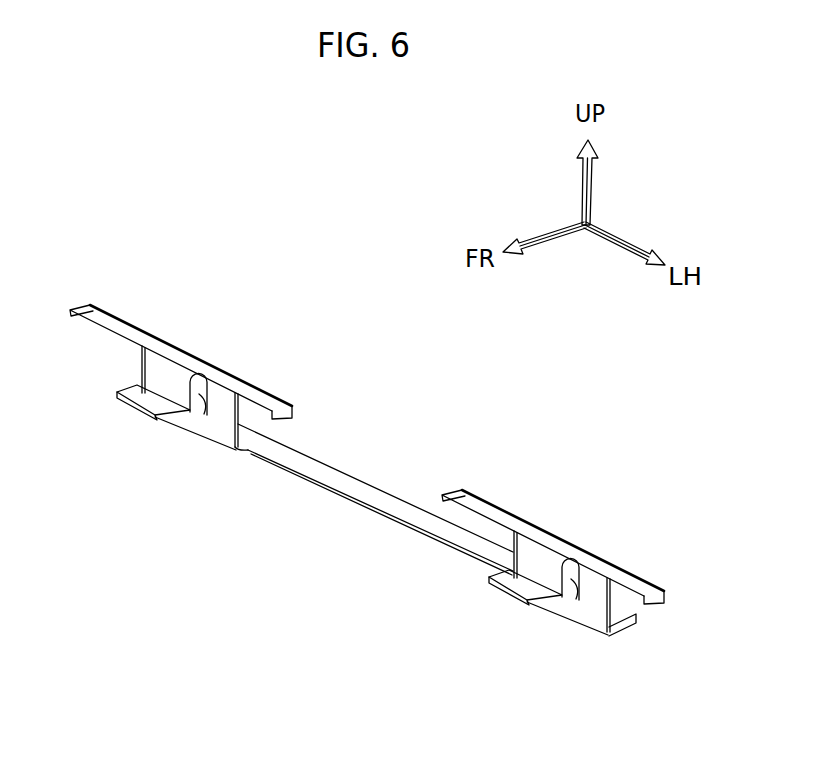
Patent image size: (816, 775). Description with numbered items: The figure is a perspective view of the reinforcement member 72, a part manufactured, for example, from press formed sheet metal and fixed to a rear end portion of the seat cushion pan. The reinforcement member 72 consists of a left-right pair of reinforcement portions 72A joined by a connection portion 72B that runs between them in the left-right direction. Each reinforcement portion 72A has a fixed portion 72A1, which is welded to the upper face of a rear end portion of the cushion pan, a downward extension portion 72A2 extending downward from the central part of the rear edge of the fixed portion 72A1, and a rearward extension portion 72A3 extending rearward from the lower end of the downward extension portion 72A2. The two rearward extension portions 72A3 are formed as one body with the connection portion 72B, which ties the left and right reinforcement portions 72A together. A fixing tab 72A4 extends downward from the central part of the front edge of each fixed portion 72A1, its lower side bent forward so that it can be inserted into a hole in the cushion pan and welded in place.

The reinforcement member 72 is at (330, 566).
The reinforcement portion 72A is at (194, 355).
The fixed portion 72A1 is at (118, 325).
The downward extension portion 72A2 is at (213, 422).
The rearward extension portion 72A3 is at (233, 418).
The fixing tab 72A4 is at (122, 400).
The connection portion 72B is at (379, 490).